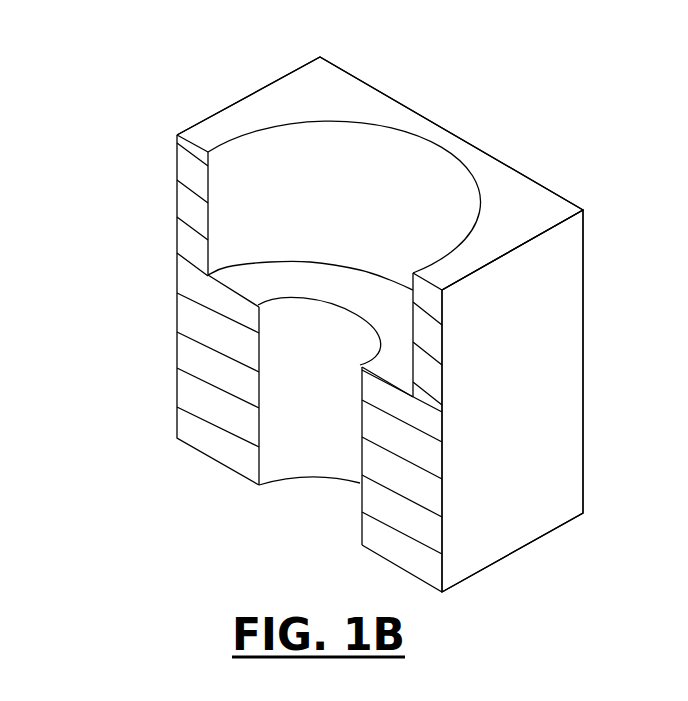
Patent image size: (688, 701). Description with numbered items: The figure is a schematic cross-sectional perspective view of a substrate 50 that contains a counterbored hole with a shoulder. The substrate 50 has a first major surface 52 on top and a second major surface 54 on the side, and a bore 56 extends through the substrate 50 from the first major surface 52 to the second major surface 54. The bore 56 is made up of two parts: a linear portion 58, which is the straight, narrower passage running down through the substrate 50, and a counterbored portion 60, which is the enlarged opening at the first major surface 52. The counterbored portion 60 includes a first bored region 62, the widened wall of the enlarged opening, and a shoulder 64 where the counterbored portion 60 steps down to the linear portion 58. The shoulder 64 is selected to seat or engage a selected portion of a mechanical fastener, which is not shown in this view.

The substrate 50 is at (120, 97).
The first major surface 52 is at (307, 86).
The second major surface 54 is at (500, 560).
The bore 56 is at (278, 497).
The linear portion 58 is at (299, 460).
The counterbored portion 60 is at (266, 159).
The first bored region 62 is at (375, 165).
The shoulder 64 is at (360, 293).